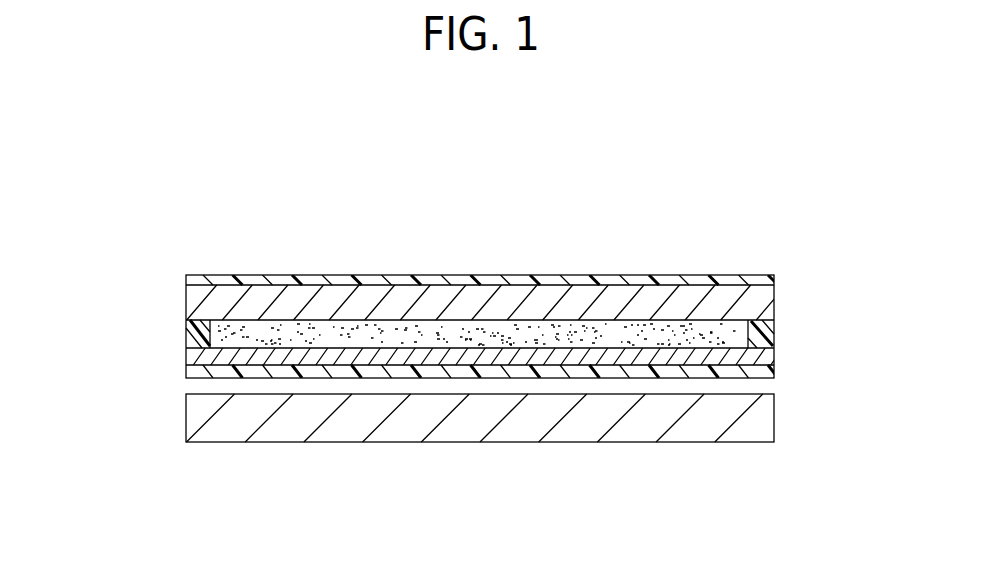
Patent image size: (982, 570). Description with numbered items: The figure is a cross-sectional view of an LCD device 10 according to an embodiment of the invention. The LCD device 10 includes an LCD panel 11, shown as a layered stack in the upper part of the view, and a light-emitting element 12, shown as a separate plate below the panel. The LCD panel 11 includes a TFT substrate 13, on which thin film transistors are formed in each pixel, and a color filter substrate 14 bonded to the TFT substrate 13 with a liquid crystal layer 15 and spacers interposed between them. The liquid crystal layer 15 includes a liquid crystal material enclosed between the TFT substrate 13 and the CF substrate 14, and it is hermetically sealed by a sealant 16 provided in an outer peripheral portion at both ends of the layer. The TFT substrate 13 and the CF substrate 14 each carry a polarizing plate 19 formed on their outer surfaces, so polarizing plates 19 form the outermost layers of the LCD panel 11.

The LCD device 10 is at (513, 184).
The LCD panel 11 is at (800, 278).
The light-emitting element 12 is at (773, 420).
The TFT substrate 13 is at (190, 357).
The CF substrate 14 is at (195, 303).
The liquid crystal layer 15 is at (433, 328).
The sealant 16 is at (188, 338).
The polarizing plate 19 is at (225, 280).